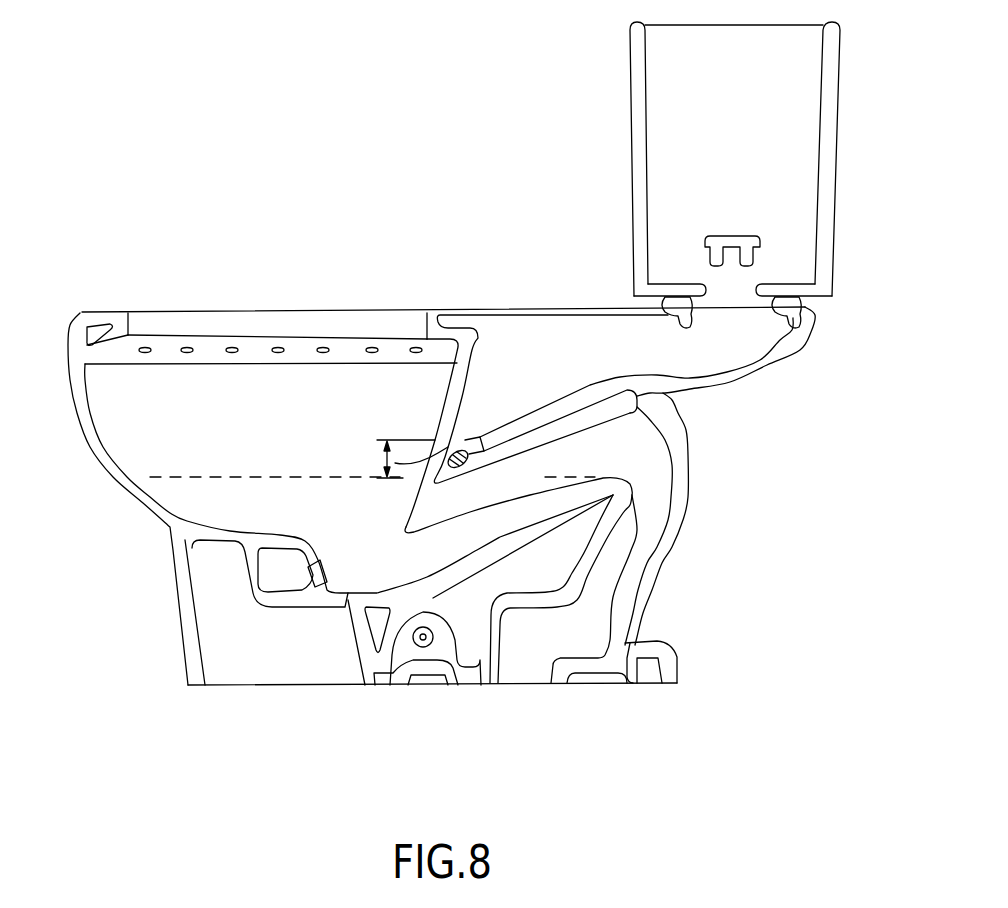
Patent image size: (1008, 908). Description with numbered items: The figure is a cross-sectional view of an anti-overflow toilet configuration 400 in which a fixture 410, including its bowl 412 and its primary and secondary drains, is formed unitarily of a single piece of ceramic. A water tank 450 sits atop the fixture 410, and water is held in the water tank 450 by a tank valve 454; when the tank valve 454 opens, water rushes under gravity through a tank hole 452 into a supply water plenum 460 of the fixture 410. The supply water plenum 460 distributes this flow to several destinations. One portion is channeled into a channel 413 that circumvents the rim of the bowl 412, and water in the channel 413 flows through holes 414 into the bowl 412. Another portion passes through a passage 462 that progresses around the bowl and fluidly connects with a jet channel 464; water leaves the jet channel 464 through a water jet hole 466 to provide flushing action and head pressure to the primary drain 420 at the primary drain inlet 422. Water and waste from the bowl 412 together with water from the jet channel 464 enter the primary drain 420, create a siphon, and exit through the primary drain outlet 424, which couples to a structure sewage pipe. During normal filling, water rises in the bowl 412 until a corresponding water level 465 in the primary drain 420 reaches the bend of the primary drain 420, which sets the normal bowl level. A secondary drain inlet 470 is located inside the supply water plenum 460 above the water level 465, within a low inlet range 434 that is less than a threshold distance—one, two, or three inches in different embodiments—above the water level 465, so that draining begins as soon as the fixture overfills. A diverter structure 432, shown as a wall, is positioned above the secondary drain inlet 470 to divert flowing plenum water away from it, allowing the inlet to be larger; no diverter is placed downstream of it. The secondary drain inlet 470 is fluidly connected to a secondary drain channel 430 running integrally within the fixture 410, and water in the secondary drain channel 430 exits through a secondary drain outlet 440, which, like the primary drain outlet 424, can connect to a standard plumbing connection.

The configuration 400 is at (120, 148).
The fixture 410 is at (805, 343).
The bowl 412 is at (205, 437).
The channel 413 is at (90, 328).
The holes 414 is at (143, 347).
The primary drain 420 is at (600, 468).
The primary drain inlet 422 is at (360, 577).
The primary drain outlet 424 is at (527, 683).
The secondary drain channel 430 is at (443, 650).
The diverter structure 432 is at (483, 437).
The low inlet range 434 is at (432, 473).
The secondary drain outlet 440 is at (466, 683).
The water tank 450 is at (805, 184).
The tank hole 452 is at (753, 284).
The tank valve 454 is at (728, 238).
The supply water plenum 460 is at (660, 357).
The passage 462 is at (457, 420).
The jet channel 464 is at (273, 565).
The water level 465 is at (233, 478).
The water jet hole 466 is at (315, 577).
The secondary drain inlet 470 is at (462, 465).